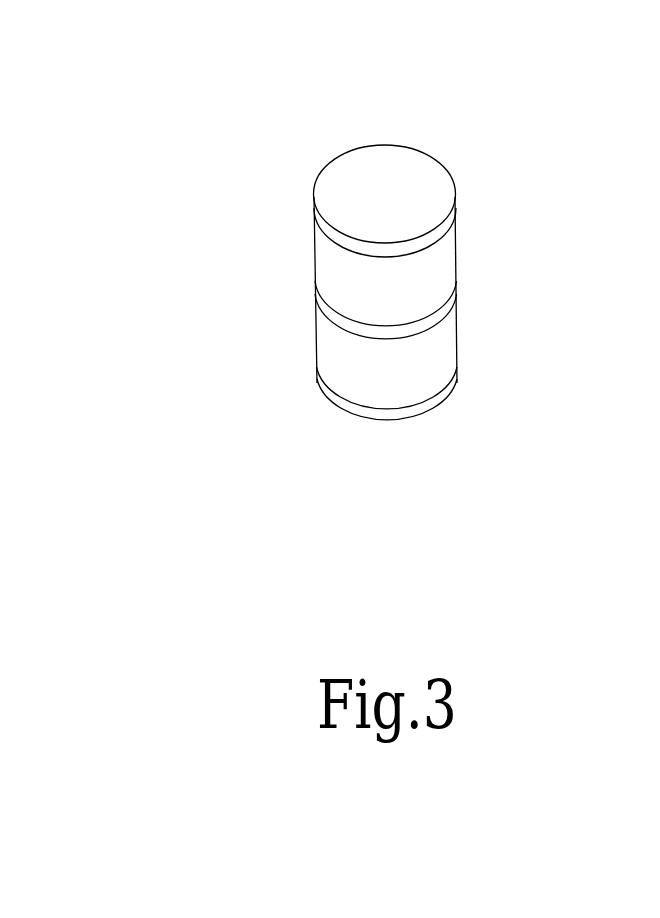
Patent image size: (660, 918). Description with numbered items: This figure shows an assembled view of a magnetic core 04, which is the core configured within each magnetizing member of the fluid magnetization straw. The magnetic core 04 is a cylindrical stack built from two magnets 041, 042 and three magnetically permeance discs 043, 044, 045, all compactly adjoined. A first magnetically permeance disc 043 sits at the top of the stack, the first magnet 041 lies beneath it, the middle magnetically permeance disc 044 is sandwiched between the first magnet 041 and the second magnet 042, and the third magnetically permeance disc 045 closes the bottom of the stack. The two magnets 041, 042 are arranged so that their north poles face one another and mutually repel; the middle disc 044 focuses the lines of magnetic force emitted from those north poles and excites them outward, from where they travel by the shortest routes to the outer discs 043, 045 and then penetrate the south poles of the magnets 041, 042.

The magnetic core 04 is at (410, 243).
The magnet 041 is at (350, 273).
The magnet 042 is at (352, 362).
The magnetically permeance disc 043 is at (430, 241).
The magnetically permeance disc 044 is at (432, 326).
The magnetically permeance disc 045 is at (433, 413).